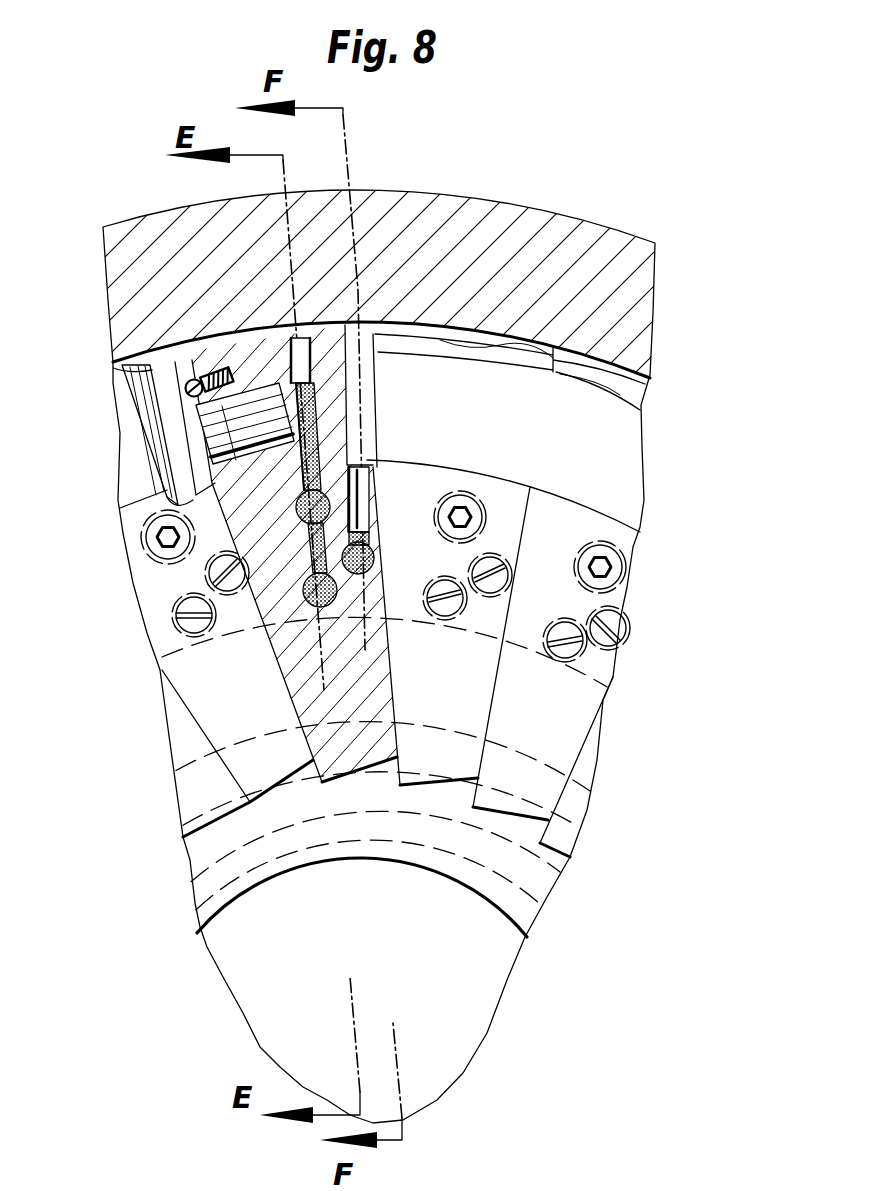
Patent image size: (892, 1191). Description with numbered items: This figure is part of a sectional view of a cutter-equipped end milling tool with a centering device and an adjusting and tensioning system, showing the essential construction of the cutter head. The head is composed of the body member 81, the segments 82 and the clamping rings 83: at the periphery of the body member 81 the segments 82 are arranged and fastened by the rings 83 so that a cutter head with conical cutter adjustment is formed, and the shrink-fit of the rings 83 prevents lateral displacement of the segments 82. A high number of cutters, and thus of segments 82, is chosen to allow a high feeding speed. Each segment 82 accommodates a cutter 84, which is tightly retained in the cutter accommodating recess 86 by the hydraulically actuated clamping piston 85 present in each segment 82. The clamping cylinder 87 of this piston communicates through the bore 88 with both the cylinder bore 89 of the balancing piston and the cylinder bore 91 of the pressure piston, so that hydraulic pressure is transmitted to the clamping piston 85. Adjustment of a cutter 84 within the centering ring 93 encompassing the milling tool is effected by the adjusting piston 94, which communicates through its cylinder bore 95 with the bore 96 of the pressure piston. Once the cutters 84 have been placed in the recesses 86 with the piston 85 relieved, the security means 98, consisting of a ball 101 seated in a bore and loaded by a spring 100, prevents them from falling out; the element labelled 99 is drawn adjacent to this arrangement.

The body member 81 is at (533, 902).
The segments 82 is at (297, 673).
The clamping rings 83 is at (620, 441).
The cutters 84 is at (375, 412).
The clamping piston 85 is at (243, 466).
The cutter accommodating recess 86 is at (118, 381).
The clamping cylinder 87 is at (252, 452).
The bore 88 is at (300, 515).
The cylinder bore 89 is at (312, 549).
The cylinder bore 91 is at (319, 592).
The centering ring 93 is at (527, 220).
The adjusting piston 94 is at (355, 512).
The cylinder bore 95 is at (376, 545).
The bore 96 is at (364, 568).
The security means 98 is at (140, 360).
The piston pin 99 is at (236, 366).
The spring 100 is at (209, 370).
The ball 101 is at (193, 379).